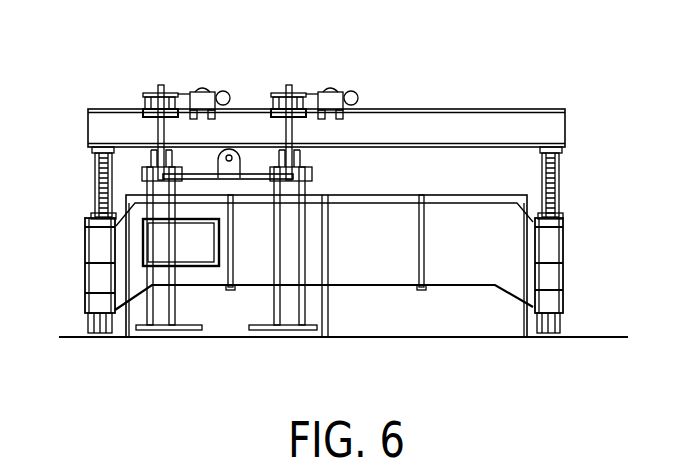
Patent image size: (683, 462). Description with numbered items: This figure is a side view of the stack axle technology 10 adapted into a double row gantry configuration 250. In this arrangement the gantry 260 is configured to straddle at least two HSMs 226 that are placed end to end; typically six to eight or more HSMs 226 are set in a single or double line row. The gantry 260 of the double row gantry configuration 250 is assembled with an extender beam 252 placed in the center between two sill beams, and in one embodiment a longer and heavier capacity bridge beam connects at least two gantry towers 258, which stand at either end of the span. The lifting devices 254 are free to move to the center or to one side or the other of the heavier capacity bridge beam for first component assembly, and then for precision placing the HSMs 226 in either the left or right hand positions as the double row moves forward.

The stack axle technology 10 is at (102, 338).
The HSM 226 is at (522, 345).
The double row gantry configuration 250 is at (578, 292).
The extender beam 252 is at (453, 108).
The lifting device 254 is at (155, 137).
The gantry tower 258 is at (93, 183).
The gantry 260 is at (143, 73).